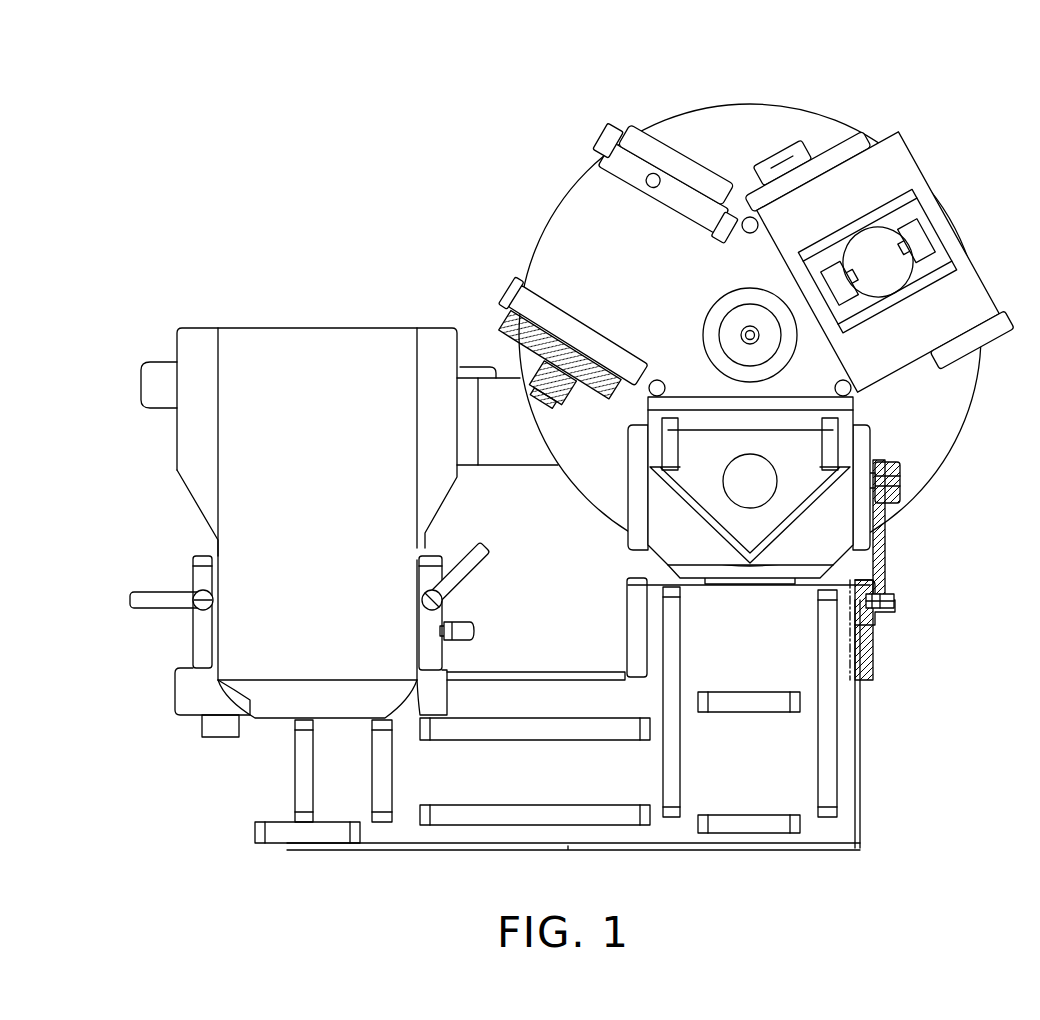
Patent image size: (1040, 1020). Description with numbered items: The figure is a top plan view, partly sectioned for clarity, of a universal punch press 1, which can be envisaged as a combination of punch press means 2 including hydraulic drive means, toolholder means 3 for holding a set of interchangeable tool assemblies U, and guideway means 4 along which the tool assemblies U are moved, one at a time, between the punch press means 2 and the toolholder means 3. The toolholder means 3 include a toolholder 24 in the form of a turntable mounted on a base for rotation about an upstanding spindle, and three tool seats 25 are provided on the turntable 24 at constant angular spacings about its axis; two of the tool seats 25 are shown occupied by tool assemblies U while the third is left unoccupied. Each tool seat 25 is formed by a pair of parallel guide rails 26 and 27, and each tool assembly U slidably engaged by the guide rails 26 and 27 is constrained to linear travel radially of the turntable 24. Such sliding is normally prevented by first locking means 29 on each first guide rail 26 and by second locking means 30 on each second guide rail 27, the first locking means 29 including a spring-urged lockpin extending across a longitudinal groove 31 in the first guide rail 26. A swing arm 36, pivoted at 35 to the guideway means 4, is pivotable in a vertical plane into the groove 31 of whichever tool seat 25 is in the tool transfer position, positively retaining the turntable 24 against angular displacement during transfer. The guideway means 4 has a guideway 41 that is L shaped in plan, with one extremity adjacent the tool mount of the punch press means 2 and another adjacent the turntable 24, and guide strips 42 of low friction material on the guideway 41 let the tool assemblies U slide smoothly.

The universal punch press 1 is at (230, 282).
The punch press means 2 is at (232, 360).
The toolholder means 3 is at (540, 140).
The guideway means 4 is at (476, 858).
The toolholder 24 is at (690, 125).
The tool seat 25 is at (588, 170).
The first guide rail 26 is at (546, 312).
The second guide rail 27 is at (706, 212).
The first locking means 29 is at (576, 356).
The second locking means 30 is at (657, 186).
The groove 31 is at (545, 350).
The pivot 35 is at (882, 606).
The swing arm 36 is at (890, 545).
The guideway 41 is at (660, 832).
The guide strips 42 is at (790, 700).
The tool assembly U is at (905, 160).